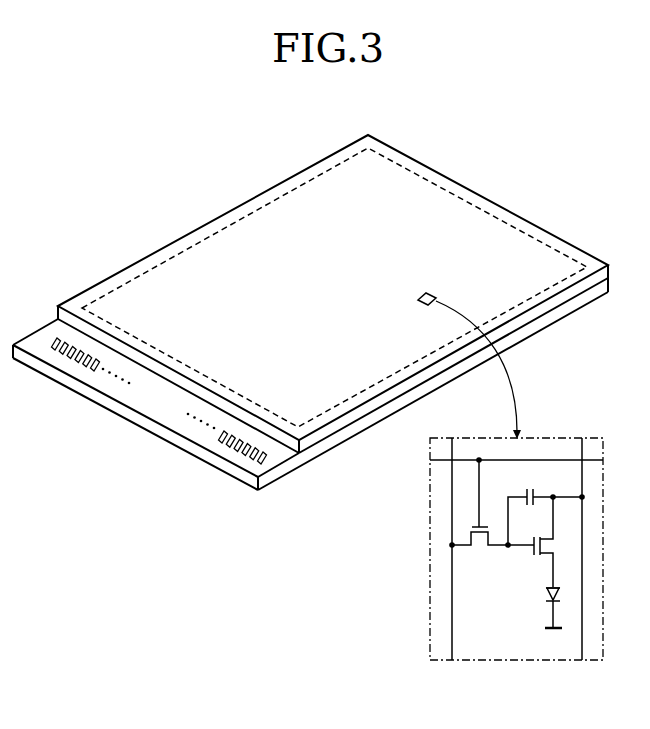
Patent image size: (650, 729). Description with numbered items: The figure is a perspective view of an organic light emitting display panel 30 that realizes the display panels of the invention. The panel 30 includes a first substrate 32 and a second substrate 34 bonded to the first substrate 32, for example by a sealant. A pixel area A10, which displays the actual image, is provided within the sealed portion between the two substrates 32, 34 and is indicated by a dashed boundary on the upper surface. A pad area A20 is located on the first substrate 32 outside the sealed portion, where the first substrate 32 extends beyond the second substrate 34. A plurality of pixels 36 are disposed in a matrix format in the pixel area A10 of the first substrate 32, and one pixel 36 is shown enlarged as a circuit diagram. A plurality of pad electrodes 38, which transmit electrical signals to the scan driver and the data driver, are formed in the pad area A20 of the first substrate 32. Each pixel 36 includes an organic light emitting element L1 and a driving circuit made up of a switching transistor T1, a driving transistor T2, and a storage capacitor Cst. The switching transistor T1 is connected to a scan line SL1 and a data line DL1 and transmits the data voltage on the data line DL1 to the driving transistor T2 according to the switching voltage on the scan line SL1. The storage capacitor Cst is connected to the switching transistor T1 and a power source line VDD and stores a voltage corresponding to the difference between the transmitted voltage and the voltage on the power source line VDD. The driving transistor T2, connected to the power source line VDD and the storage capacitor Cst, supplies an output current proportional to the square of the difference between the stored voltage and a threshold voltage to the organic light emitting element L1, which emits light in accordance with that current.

The organic light emitting display panel 30 is at (314, 313).
The first substrate 32 is at (556, 313).
The second substrate 34 is at (510, 217).
The pixel 36 is at (434, 293).
The pad electrode 38 is at (228, 443).
The pixel area A10 is at (454, 187).
The pad area A20 is at (201, 417).
The data line DL1 is at (450, 537).
The power source line VDD is at (582, 537).
The scan line SL1 is at (498, 460).
The storage capacitor Cst is at (546, 507).
The switching transistor T1 is at (480, 514).
The driving transistor T2 is at (544, 542).
The organic light emitting element L1 is at (542, 607).